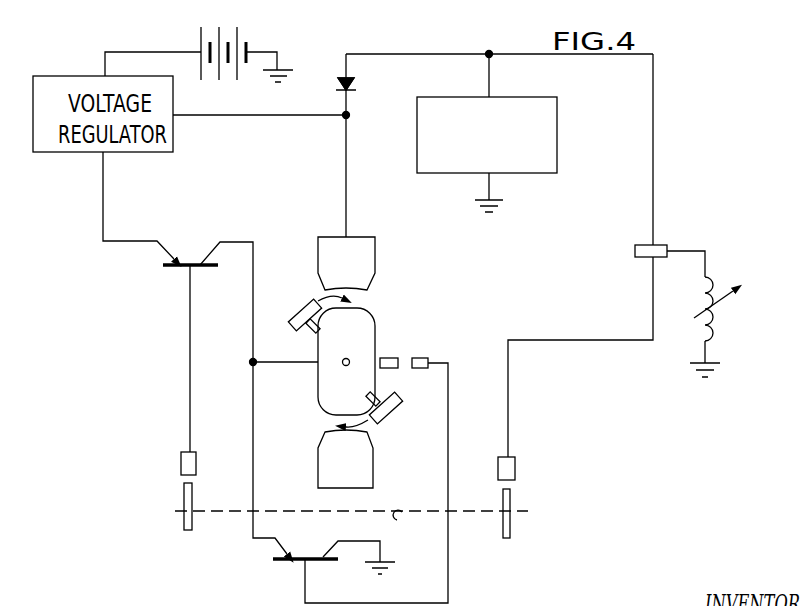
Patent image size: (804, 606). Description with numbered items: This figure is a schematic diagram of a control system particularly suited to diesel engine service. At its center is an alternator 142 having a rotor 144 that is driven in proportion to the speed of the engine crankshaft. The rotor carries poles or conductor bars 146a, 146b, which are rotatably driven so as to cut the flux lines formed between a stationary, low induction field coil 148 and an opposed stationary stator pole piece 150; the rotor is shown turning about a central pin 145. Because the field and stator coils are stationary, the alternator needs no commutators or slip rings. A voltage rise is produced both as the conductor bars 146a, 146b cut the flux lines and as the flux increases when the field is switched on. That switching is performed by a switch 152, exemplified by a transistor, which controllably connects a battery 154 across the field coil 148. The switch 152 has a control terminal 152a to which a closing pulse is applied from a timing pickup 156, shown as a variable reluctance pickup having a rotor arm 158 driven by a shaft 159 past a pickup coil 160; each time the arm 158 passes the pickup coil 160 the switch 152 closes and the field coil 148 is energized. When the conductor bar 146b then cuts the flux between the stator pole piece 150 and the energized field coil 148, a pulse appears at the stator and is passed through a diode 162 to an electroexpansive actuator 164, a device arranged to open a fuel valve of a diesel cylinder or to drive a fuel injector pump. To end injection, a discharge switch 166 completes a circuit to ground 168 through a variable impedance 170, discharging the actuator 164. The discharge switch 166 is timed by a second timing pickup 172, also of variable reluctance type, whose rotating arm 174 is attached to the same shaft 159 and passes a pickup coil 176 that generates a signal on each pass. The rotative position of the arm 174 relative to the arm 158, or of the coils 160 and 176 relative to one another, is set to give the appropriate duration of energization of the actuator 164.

The alternator 142 is at (412, 350).
The rotor 144 is at (312, 324).
The pivot pin 145 is at (344, 364).
The conductor bar 146a is at (388, 413).
The conductor bar 146b is at (299, 316).
The field coil 148 is at (360, 337).
The stator pole piece 150 is at (358, 276).
The switch 152 is at (191, 262).
The control terminal 152a is at (190, 286).
The battery 154 is at (240, 42).
The timing pickup 156 is at (141, 494).
The rotor arm 158 is at (183, 518).
The shaft 159 is at (420, 497).
The pickup coil 160 is at (181, 454).
The diode 162 is at (355, 85).
The electroexpansive actuator 164 is at (565, 137).
The discharge switch 166 is at (669, 247).
The ground 168 is at (698, 371).
The variable impedance 170 is at (713, 320).
The second timing pickup 172 is at (508, 497).
The rotating arm 174 is at (512, 502).
The pickup coil 176 is at (516, 468).